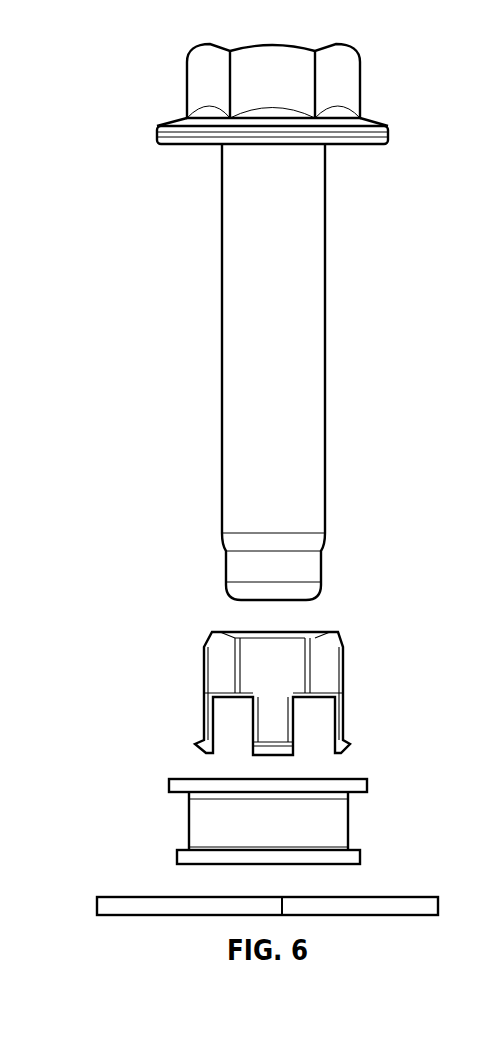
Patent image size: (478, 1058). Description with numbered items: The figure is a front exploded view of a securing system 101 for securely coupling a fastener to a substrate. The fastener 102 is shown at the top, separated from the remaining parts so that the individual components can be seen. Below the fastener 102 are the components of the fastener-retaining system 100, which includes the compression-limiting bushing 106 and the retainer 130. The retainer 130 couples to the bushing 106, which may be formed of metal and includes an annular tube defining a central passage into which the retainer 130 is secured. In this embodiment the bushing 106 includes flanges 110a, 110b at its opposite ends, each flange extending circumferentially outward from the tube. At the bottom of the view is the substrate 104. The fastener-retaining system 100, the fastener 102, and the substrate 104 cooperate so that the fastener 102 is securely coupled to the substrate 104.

The securing system 101 is at (117, 90).
The fastener 102 is at (332, 343).
The fastener-retaining system 100 is at (372, 633).
The retainer 130 is at (203, 668).
The compression-limiting bushing 106 is at (188, 817).
The flange 110a is at (168, 783).
The flange 110b is at (174, 858).
The substrate 104 is at (412, 896).